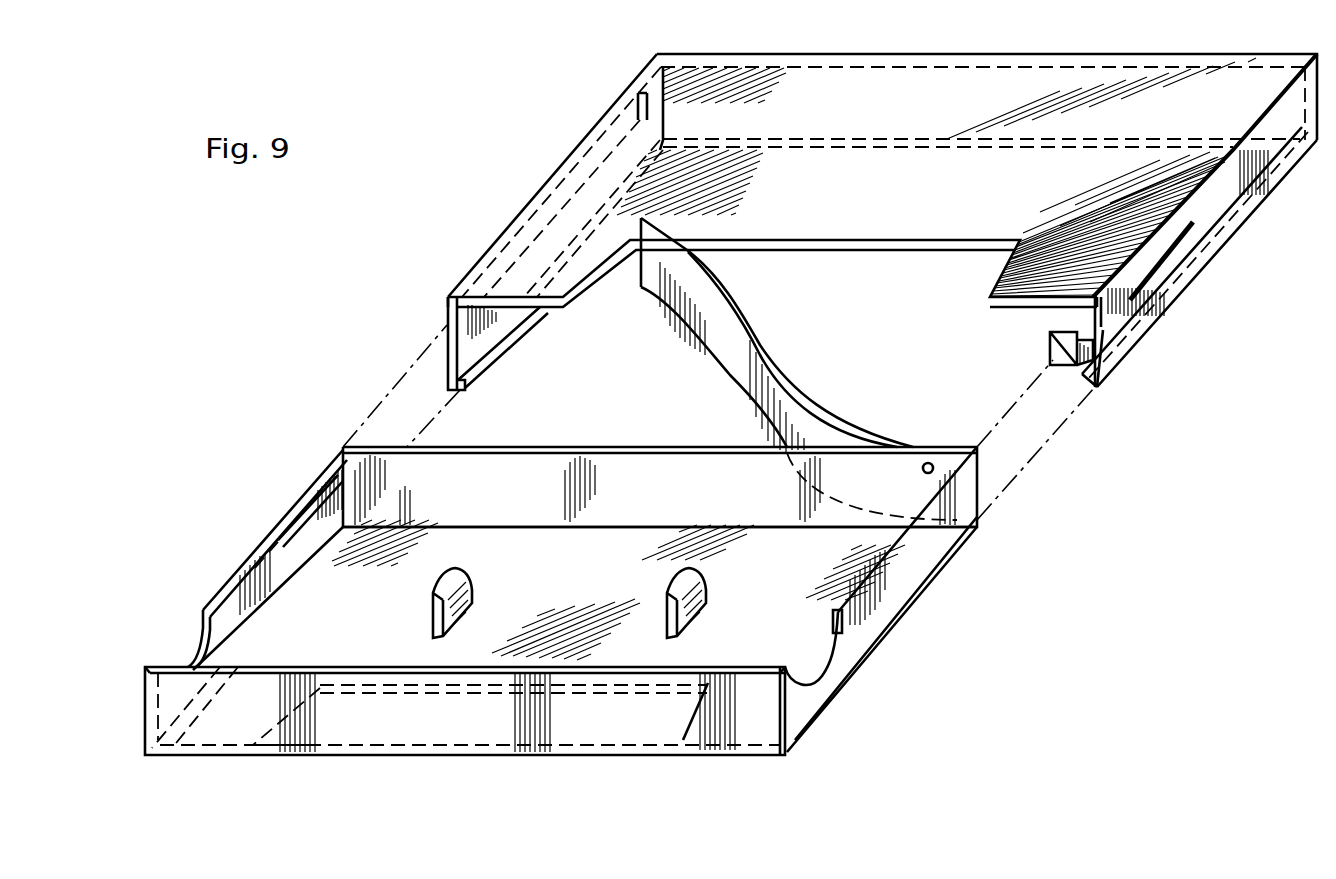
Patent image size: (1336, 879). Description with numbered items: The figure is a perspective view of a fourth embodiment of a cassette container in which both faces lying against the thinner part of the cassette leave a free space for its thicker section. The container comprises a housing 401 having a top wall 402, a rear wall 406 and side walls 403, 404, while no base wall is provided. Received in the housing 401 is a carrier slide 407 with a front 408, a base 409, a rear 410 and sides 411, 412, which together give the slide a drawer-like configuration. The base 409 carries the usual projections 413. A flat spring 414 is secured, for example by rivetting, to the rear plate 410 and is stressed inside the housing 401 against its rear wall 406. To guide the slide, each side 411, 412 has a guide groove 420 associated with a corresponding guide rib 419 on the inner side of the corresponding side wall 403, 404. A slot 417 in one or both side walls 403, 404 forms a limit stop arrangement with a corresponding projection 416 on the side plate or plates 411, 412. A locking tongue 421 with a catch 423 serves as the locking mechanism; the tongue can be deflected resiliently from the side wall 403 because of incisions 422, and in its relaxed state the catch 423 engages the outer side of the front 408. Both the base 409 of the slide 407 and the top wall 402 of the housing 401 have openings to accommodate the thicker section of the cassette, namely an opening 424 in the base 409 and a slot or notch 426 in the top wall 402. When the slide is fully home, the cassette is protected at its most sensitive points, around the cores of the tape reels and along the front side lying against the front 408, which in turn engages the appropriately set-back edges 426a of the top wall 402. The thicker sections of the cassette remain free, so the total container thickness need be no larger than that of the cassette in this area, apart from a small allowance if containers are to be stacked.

The housing 401 is at (1015, 53).
The top wall 402 is at (900, 83).
The side wall 403 is at (447, 332).
The side wall 404 is at (1220, 210).
The rear wall 406 is at (760, 98).
The carrier slide 407 is at (580, 447).
The front 408 is at (792, 712).
The base 409 is at (612, 565).
The rear 410 is at (677, 470).
The side 411 is at (235, 593).
The side 412 is at (903, 570).
The projections 413 is at (433, 612).
The flat spring 414 is at (745, 310).
The projection 416 is at (315, 490).
The slot 417 is at (521, 238).
The guide rib 419 is at (465, 382).
The guide groove 420 is at (180, 720).
The locking tongue 421 is at (1105, 345).
The incisions 422 is at (1167, 258).
The catch 423 is at (1050, 348).
The opening 424 is at (491, 687).
The slot or notch 426 is at (891, 242).
The edges 426a is at (549, 307).